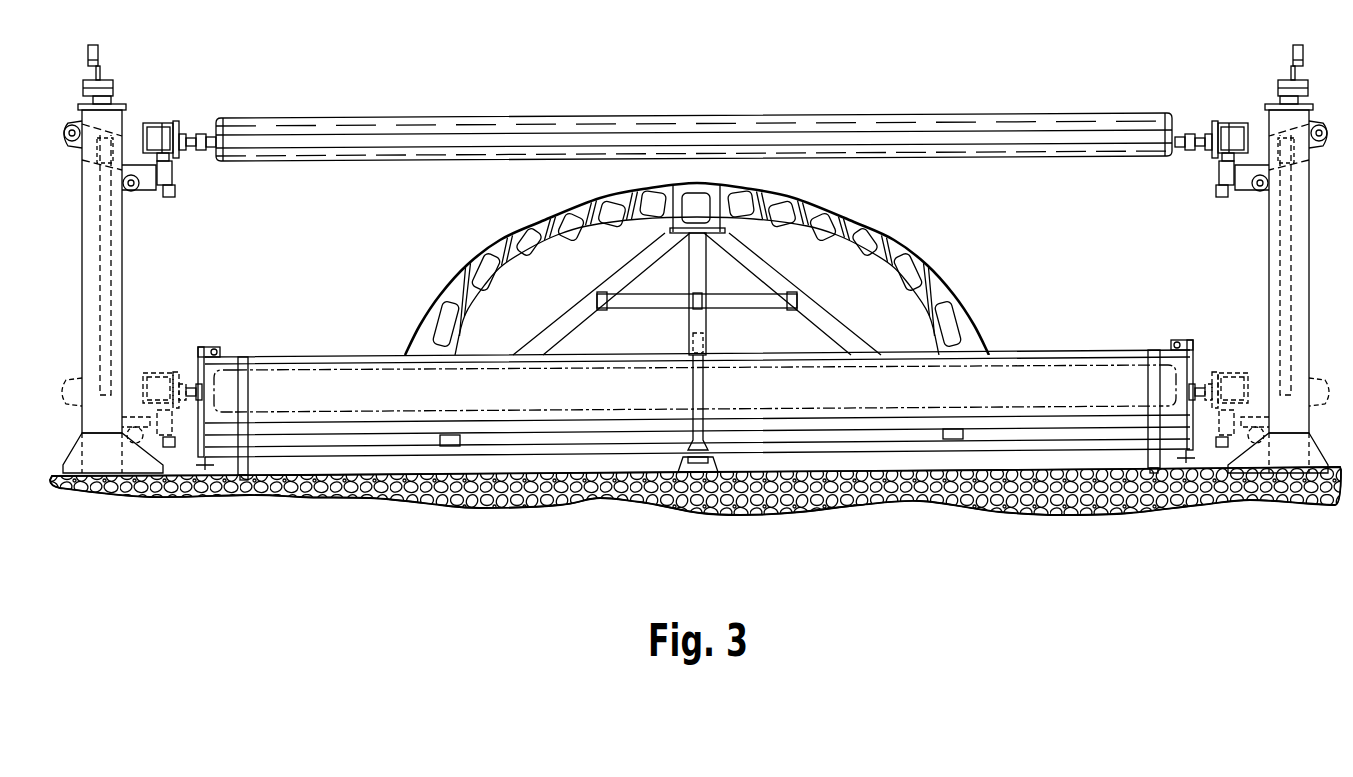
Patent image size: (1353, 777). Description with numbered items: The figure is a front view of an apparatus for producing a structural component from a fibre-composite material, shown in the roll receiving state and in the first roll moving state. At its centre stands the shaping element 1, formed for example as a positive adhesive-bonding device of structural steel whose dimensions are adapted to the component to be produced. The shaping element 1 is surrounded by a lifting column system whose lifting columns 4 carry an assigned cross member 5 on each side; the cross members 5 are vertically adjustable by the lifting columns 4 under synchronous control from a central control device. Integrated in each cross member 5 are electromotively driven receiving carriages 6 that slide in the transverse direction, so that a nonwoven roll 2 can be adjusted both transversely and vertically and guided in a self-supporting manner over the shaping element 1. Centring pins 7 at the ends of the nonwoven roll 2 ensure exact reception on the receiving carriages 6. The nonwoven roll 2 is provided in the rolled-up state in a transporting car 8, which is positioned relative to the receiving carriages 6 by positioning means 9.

The shaping element 1 is at (900, 246).
The nonwoven roll 2 is at (1060, 118).
The lifting column 4 is at (93, 259).
The cross member 5 is at (160, 136).
The receiving carriage 6 is at (178, 131).
The centring pin 7 is at (200, 150).
The transporting car 8 is at (307, 448).
The positioning means 9 is at (1154, 478).